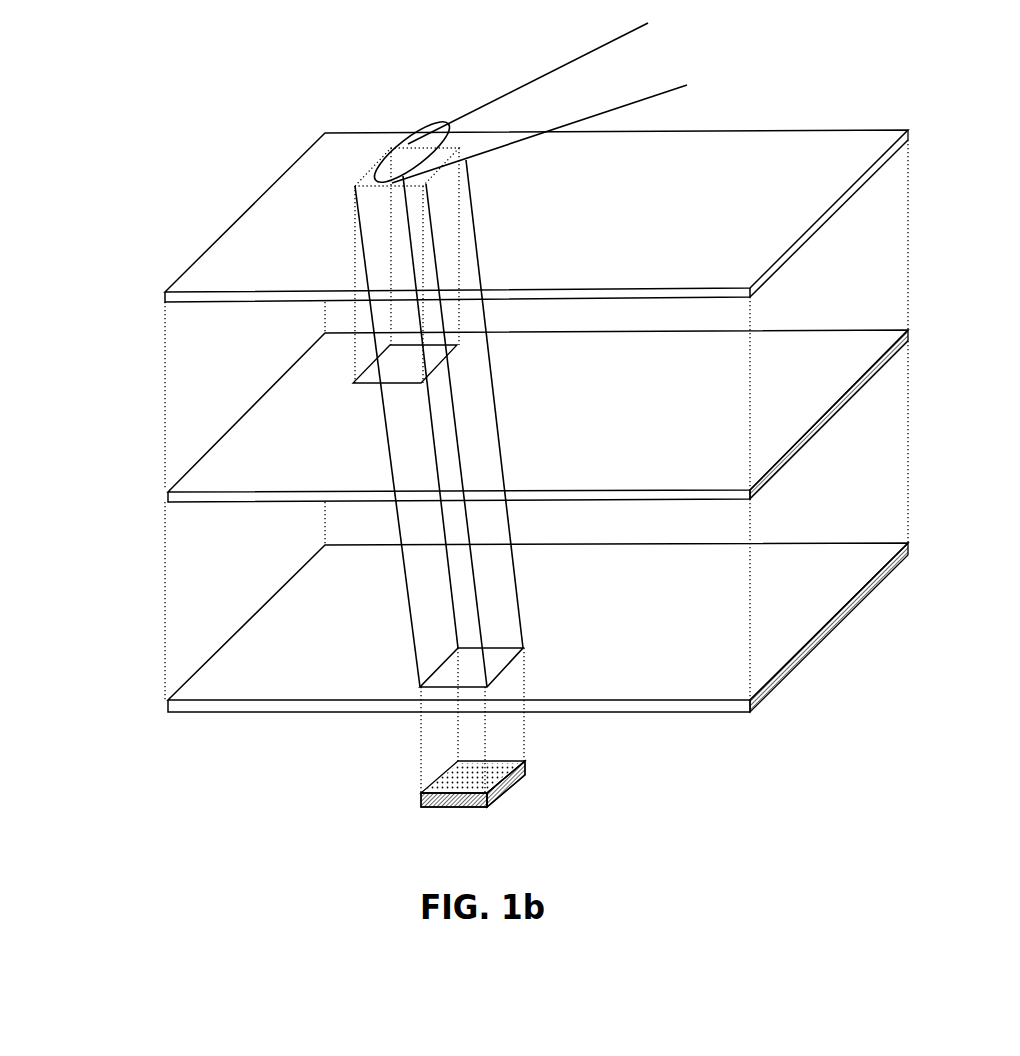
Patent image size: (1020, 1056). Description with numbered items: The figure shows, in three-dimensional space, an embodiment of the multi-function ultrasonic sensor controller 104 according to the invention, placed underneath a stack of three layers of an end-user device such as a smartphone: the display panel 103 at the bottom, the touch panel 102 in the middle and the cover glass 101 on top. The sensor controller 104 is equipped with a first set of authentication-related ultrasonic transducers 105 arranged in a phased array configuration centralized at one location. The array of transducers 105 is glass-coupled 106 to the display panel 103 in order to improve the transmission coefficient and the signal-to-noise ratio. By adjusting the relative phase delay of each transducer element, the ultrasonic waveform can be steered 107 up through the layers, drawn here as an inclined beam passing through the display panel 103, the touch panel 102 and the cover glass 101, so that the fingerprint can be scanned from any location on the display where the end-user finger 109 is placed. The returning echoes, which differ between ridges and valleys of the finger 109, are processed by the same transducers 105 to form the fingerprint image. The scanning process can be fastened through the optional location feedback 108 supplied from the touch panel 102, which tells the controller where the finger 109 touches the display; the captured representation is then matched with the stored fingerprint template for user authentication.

The cover glass 101 is at (171, 280).
The touch panel 102 is at (177, 478).
The display panel 103 is at (177, 690).
The multi-function ultrasonic sensor controller 104 is at (413, 808).
The authentication-related ultrasonic transducers 105 is at (478, 808).
The glass coupling 106 is at (532, 775).
The steering of the ultrasonic waveform 107 is at (513, 517).
The location feedback 108 is at (347, 382).
The end-user finger 109 is at (493, 90).